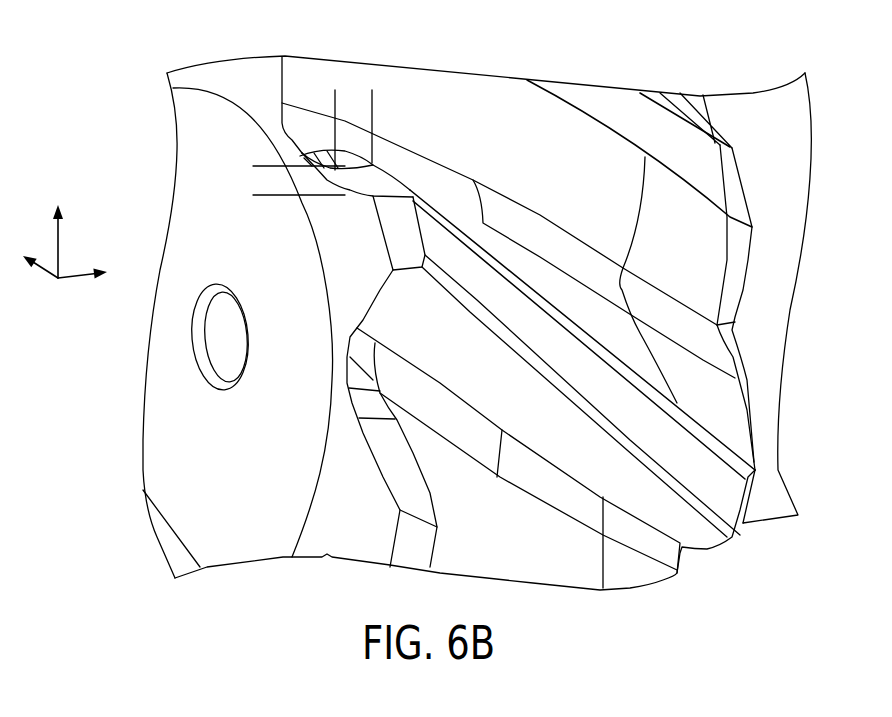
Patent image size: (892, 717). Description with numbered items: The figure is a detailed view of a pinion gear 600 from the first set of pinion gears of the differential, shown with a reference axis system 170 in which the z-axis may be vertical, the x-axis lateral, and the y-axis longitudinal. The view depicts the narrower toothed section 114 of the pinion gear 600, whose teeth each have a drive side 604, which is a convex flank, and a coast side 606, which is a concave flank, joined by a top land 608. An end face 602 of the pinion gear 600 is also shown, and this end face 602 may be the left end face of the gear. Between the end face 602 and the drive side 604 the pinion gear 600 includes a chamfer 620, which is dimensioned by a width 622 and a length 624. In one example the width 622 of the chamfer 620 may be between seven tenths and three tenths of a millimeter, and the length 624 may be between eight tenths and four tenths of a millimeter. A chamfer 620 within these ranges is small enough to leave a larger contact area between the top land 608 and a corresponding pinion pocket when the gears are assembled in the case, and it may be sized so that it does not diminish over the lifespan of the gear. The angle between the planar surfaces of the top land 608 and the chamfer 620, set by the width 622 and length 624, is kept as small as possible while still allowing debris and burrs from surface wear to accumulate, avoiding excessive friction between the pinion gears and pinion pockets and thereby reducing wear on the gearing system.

The pinion gear 600 is at (105, 104).
The axis system 170 is at (104, 214).
The end face 602 is at (178, 411).
The narrower toothed section 114 is at (475, 80).
The chamfer 620 is at (393, 182).
The width 622 is at (320, 110).
The length 624 is at (272, 125).
The drive side 604 is at (703, 387).
The top land 608 is at (673, 455).
The coast side 606 is at (592, 450).